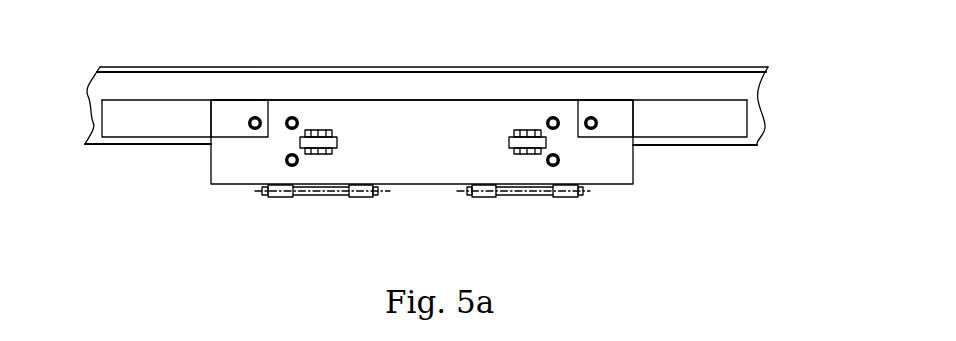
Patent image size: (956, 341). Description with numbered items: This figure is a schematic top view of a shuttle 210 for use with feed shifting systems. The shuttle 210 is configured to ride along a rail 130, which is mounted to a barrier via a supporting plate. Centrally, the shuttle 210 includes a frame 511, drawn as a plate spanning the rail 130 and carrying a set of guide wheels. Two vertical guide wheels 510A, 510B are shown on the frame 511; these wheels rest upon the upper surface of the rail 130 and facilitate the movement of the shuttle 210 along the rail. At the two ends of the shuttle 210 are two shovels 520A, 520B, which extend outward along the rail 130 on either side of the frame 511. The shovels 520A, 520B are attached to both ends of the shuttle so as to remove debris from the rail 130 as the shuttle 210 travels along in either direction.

The shuttle 210 is at (421, 108).
The rail 130 is at (125, 142).
The shovel 520A is at (183, 141).
The shovel 520B is at (658, 138).
The frame 511 is at (605, 176).
The vertical guide wheel 510A is at (338, 142).
The vertical guide wheel 510B is at (508, 147).